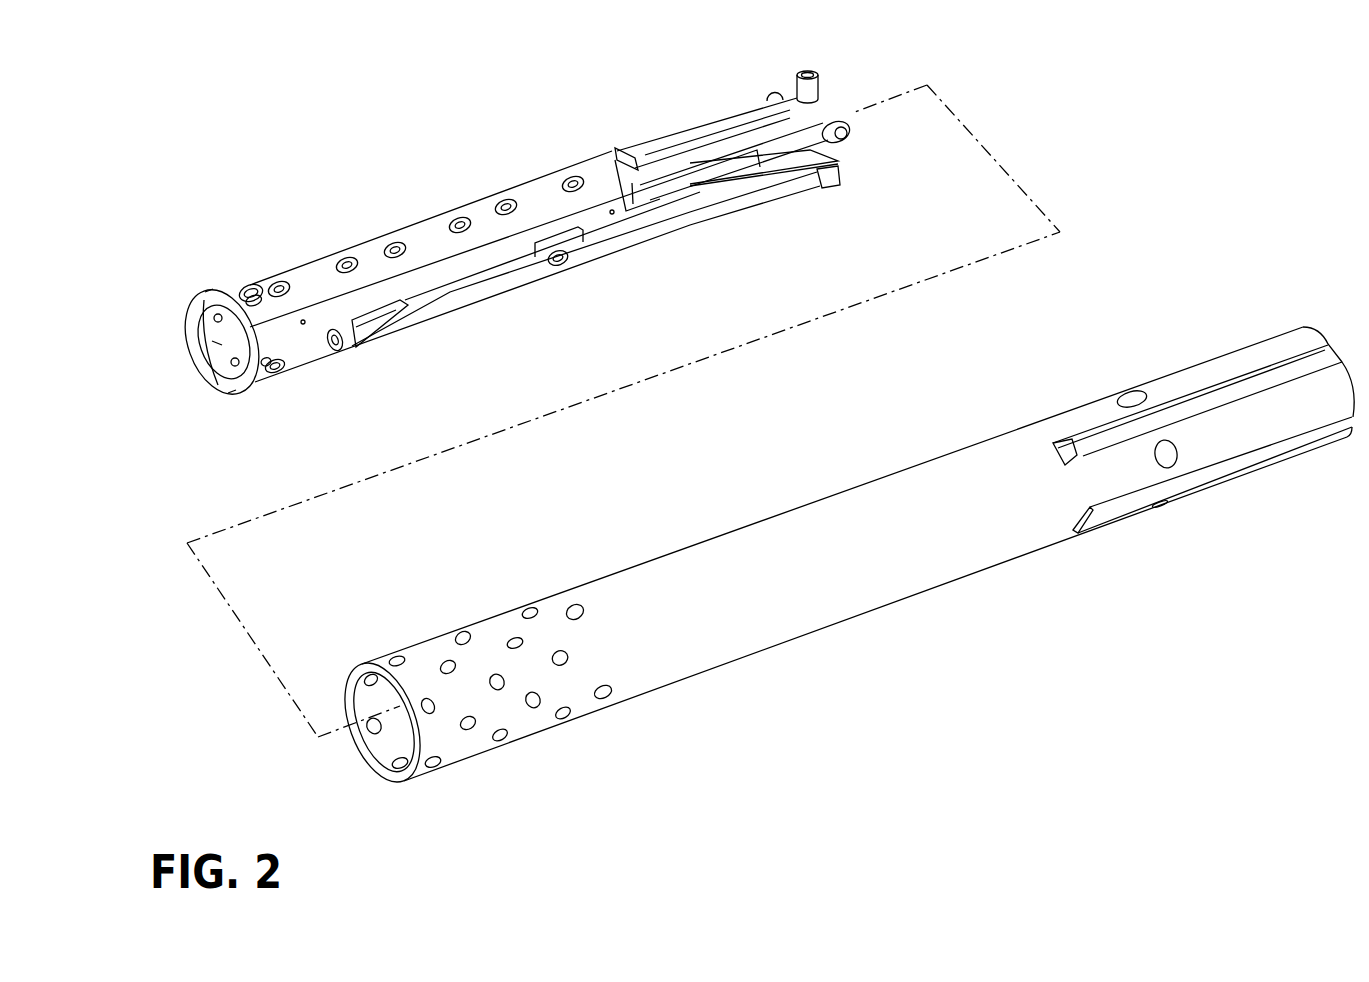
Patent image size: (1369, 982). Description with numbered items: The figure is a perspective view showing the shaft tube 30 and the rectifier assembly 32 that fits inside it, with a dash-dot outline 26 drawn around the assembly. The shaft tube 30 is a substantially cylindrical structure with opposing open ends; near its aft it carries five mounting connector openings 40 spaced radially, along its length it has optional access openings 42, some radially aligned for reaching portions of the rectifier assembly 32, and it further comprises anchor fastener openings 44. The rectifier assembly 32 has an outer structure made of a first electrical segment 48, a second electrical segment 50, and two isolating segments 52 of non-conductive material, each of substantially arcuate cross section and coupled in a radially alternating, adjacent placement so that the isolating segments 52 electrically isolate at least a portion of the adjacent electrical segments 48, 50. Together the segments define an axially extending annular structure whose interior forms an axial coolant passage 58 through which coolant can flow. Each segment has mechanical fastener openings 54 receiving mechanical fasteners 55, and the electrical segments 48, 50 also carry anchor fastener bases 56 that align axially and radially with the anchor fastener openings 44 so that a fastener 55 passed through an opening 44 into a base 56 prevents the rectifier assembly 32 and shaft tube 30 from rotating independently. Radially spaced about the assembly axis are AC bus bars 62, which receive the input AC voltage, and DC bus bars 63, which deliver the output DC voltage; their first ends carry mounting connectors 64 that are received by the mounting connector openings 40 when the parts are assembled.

The housing 26 is at (974, 130).
The shaft tube 30 is at (986, 578).
The rectifier assembly 32 is at (402, 104).
The mounting connector openings 40 is at (1180, 460).
The access openings 42 is at (500, 692).
The anchor fastener openings 44 is at (613, 693).
The first electrical segment 48 is at (318, 262).
The second electrical segment 50 is at (205, 392).
The isolating segments 52 is at (184, 306).
The mechanical fastener openings 54 is at (273, 282).
The mechanical fasteners 55 is at (245, 284).
The anchor fastener bases 56 is at (244, 287).
The axial coolant passage 58 is at (215, 344).
The AC bus bars 62 is at (652, 148).
The DC bus bars 63 is at (722, 120).
The mounting connectors 64 is at (800, 72).